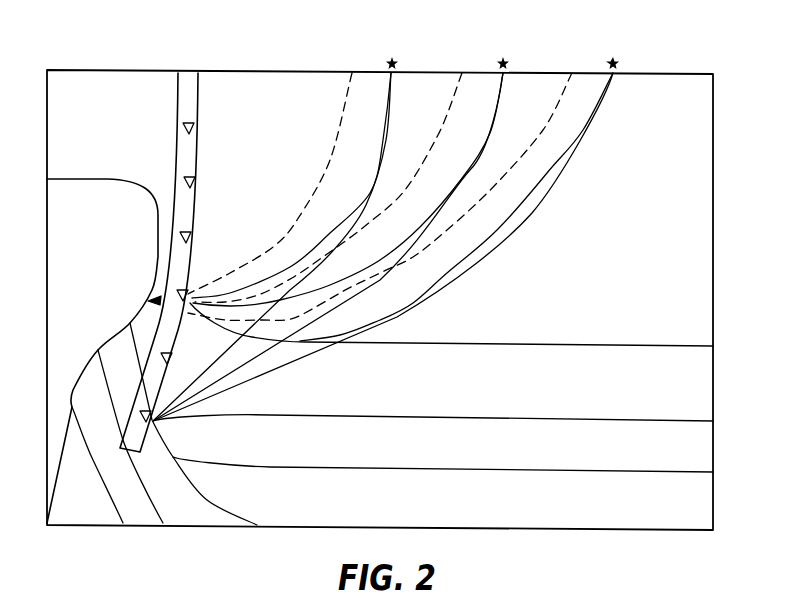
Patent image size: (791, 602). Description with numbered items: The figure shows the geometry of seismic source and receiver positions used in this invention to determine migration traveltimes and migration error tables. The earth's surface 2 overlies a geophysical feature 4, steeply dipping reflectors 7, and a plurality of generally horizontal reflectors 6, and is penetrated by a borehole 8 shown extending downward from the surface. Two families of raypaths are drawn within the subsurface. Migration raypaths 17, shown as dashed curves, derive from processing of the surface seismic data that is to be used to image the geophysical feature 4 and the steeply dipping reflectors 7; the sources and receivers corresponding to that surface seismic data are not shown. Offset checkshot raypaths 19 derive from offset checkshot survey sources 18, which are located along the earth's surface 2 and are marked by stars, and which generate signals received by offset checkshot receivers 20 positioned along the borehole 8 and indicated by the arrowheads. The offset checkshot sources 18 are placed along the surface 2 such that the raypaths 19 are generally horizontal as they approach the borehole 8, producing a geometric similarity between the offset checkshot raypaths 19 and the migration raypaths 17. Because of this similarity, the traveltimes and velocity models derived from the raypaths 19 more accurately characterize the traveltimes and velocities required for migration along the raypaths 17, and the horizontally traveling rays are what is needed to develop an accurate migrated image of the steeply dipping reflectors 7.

The earth's surface 2 is at (687, 73).
The geophysical feature 4 is at (55, 228).
The generally horizontal reflectors 6 is at (695, 347).
The steeply dipping reflectors 7 is at (122, 523).
The borehole 8 is at (137, 453).
The migration raypaths 17 is at (282, 320).
The offset checkshot survey sources 18 is at (613, 57).
The offset checkshot raypaths 19 is at (383, 305).
The offset checkshot receivers 20 is at (190, 291).